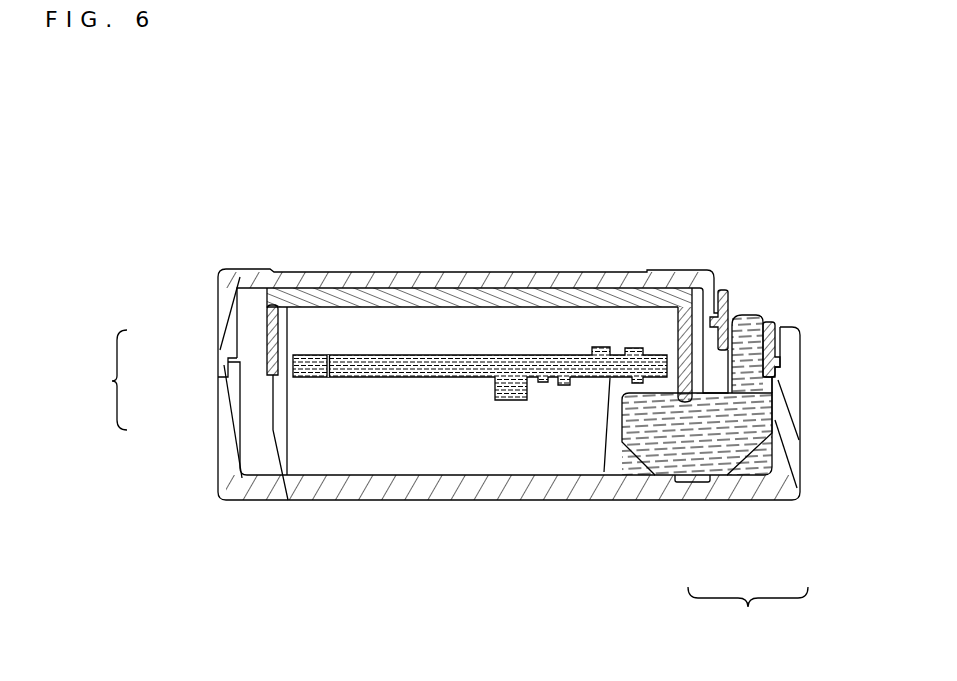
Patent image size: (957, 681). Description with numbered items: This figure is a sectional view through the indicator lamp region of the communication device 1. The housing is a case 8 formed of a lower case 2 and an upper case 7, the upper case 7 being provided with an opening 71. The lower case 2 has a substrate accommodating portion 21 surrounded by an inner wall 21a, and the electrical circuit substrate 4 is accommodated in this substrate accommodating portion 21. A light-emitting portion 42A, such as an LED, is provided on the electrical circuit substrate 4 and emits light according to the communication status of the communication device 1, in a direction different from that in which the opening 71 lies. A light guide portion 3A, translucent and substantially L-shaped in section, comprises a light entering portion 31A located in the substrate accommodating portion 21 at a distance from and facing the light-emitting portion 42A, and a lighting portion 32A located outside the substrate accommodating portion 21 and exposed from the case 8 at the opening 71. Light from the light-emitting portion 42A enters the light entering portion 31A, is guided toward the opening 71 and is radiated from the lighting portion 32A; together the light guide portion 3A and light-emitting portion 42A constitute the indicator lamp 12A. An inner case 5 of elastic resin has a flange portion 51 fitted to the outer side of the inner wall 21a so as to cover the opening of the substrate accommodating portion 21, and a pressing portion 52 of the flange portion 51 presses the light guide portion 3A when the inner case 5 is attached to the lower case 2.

The communication device 1 is at (770, 147).
The lower case 2 is at (225, 418).
The light guide portion 3A is at (735, 437).
The electrical circuit substrate 4 is at (350, 363).
The inner case 5 is at (468, 292).
The upper case 7 is at (225, 318).
The case 8 is at (112, 381).
The indicator lamp 12A is at (748, 612).
The substrate accommodating portion 21 is at (430, 338).
The inner wall 21a is at (273, 430).
The light entering portion 31A is at (612, 378).
The lighting portion 32A is at (757, 315).
The light-emitting portion 42A is at (620, 377).
The flange portion 51 is at (286, 405).
The pressing portion 52 is at (684, 345).
The opening 71 is at (742, 303).